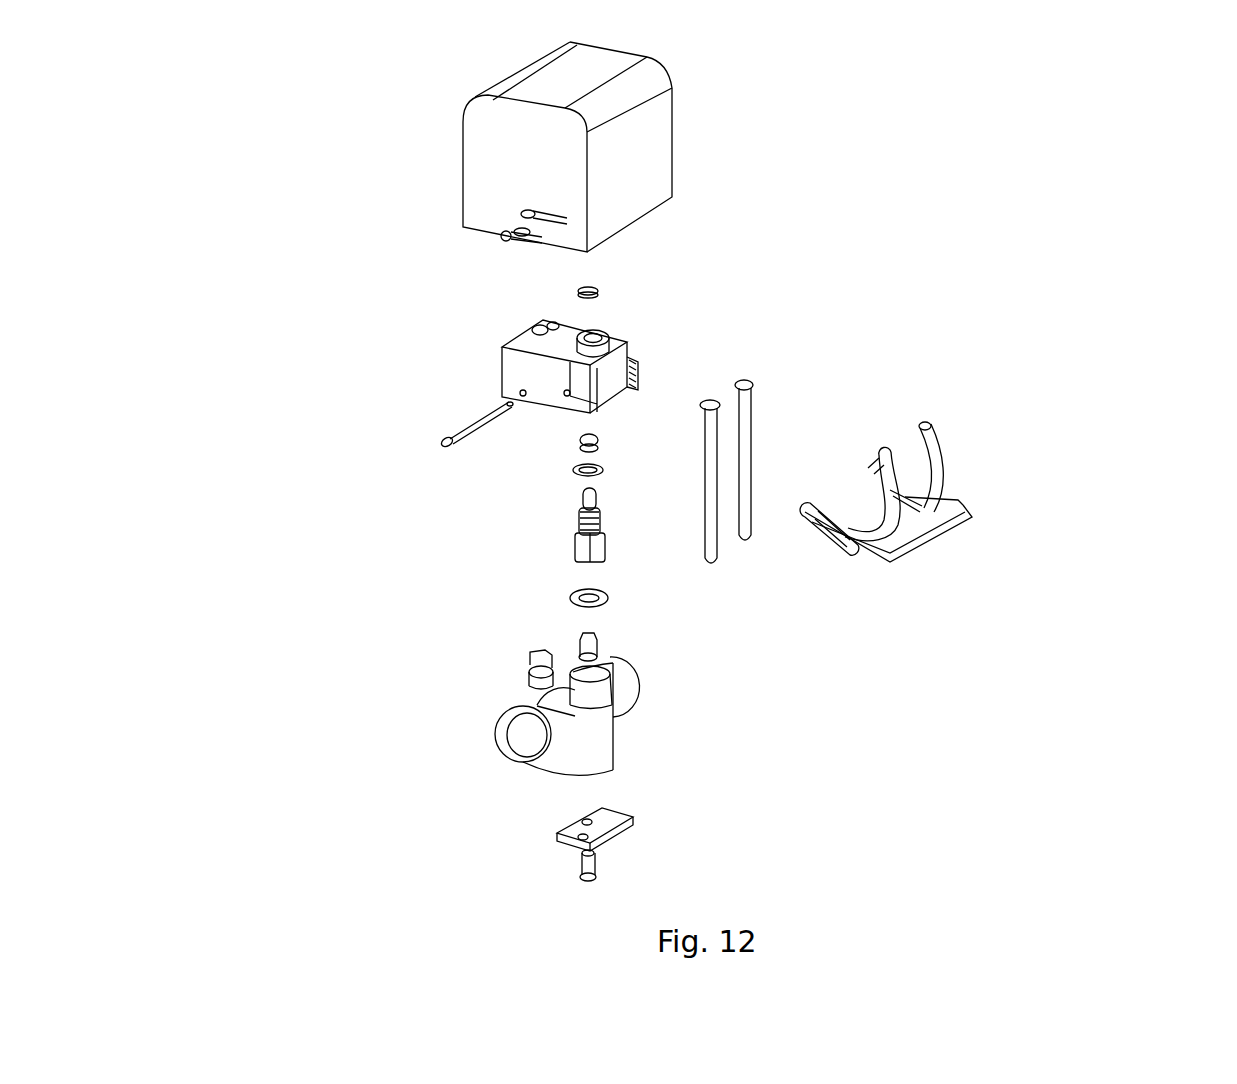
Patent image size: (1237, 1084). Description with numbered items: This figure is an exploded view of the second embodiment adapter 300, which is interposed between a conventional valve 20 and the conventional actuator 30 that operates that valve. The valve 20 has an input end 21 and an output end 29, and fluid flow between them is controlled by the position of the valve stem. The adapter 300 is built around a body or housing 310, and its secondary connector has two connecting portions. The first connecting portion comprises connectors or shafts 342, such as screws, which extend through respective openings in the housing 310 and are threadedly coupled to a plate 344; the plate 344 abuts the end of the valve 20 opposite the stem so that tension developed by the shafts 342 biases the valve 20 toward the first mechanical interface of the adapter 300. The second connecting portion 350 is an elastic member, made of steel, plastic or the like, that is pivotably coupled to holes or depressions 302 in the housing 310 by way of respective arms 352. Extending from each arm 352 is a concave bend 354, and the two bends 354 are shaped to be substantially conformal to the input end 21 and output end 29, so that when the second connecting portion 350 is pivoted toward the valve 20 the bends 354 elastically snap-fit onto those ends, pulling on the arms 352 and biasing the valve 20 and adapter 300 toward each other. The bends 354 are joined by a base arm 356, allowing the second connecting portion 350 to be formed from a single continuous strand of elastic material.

The valve 20 is at (570, 720).
The input end 21 is at (525, 745).
The output end 29 is at (625, 665).
The actuator 30 is at (502, 152).
The adapter 300 is at (425, 447).
The holes or depressions 302 is at (565, 398).
The body or housing 310 is at (492, 404).
The connectors or shafts 342 is at (748, 408).
The plate 344 is at (613, 832).
The second connecting portion 350 is at (995, 530).
The arms 352 is at (887, 447).
The concave bends 354 is at (867, 533).
The base arm 356 is at (943, 540).